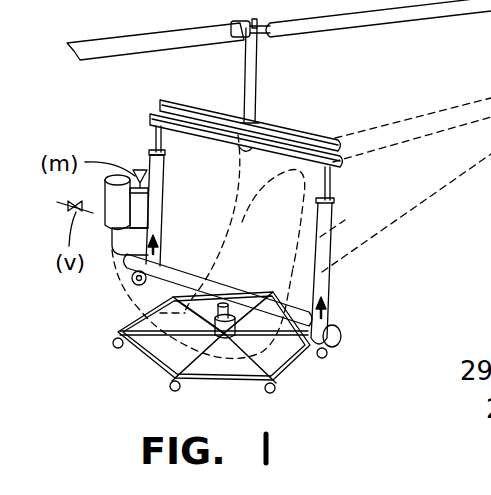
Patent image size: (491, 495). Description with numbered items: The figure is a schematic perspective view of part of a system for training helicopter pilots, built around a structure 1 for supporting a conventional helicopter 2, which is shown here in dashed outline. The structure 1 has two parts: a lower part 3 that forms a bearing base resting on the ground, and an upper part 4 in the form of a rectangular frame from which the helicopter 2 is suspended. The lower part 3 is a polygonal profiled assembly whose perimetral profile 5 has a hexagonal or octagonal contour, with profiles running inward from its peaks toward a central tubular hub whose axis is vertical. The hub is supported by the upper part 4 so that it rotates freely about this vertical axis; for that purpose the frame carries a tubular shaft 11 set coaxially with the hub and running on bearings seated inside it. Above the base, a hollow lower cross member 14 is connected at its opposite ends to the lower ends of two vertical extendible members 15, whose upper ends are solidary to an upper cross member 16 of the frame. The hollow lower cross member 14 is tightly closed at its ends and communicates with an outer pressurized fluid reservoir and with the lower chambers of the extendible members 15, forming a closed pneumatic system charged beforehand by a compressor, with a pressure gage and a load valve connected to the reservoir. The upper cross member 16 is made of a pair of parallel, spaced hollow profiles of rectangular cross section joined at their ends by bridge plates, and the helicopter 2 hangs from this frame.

The structure for supporting the helicopter 1 is at (77, 322).
The helicopter 2 is at (378, 137).
The lower part 3 is at (156, 360).
The upper part 4 is at (151, 132).
The perimetral profile 5 is at (233, 383).
The tubular shaft 11 is at (228, 304).
The hollow lower cross member 14 is at (187, 272).
The vertical extendible members 15 is at (158, 214).
The upper cross member 16 is at (198, 108).